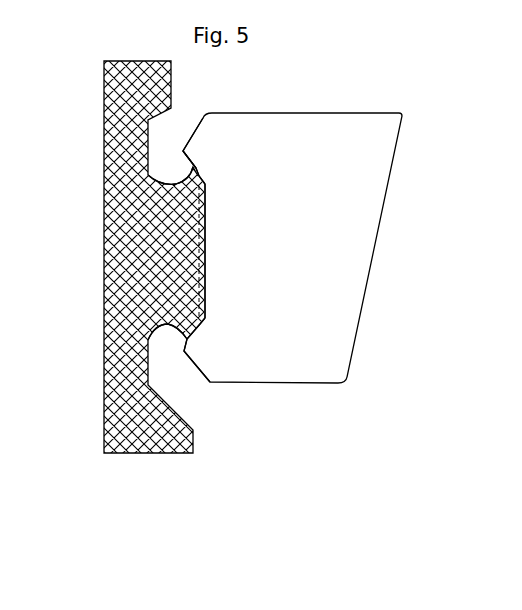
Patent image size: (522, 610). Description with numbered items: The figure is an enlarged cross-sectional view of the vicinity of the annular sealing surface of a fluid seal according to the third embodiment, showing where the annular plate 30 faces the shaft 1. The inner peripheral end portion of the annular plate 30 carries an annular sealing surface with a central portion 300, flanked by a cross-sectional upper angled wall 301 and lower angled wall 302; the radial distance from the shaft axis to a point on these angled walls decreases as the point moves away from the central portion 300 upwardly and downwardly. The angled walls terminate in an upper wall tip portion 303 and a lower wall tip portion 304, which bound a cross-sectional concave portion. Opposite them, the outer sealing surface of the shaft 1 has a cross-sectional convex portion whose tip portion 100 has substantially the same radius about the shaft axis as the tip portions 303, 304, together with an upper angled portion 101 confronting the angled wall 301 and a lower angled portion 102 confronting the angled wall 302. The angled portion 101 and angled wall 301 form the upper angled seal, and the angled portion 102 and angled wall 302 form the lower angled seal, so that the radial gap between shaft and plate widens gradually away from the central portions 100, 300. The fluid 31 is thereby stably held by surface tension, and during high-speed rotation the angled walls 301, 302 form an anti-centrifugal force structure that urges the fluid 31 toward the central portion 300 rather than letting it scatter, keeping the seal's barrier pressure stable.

The shaft 1 is at (112, 112).
The central portion (tip portion) of the shaft sealing surface 100 is at (194, 248).
The upper angled portion 101 is at (170, 190).
The lower angled portion 102 is at (173, 317).
The fluid 31 is at (202, 282).
The annular plate 30 is at (332, 145).
The central portion of the annular sealing surface 300 is at (203, 248).
The upper angled wall 301 is at (197, 176).
The lower angled wall 302 is at (200, 322).
The upper wall tip portion 303 is at (183, 151).
The lower wall tip portion 304 is at (187, 355).